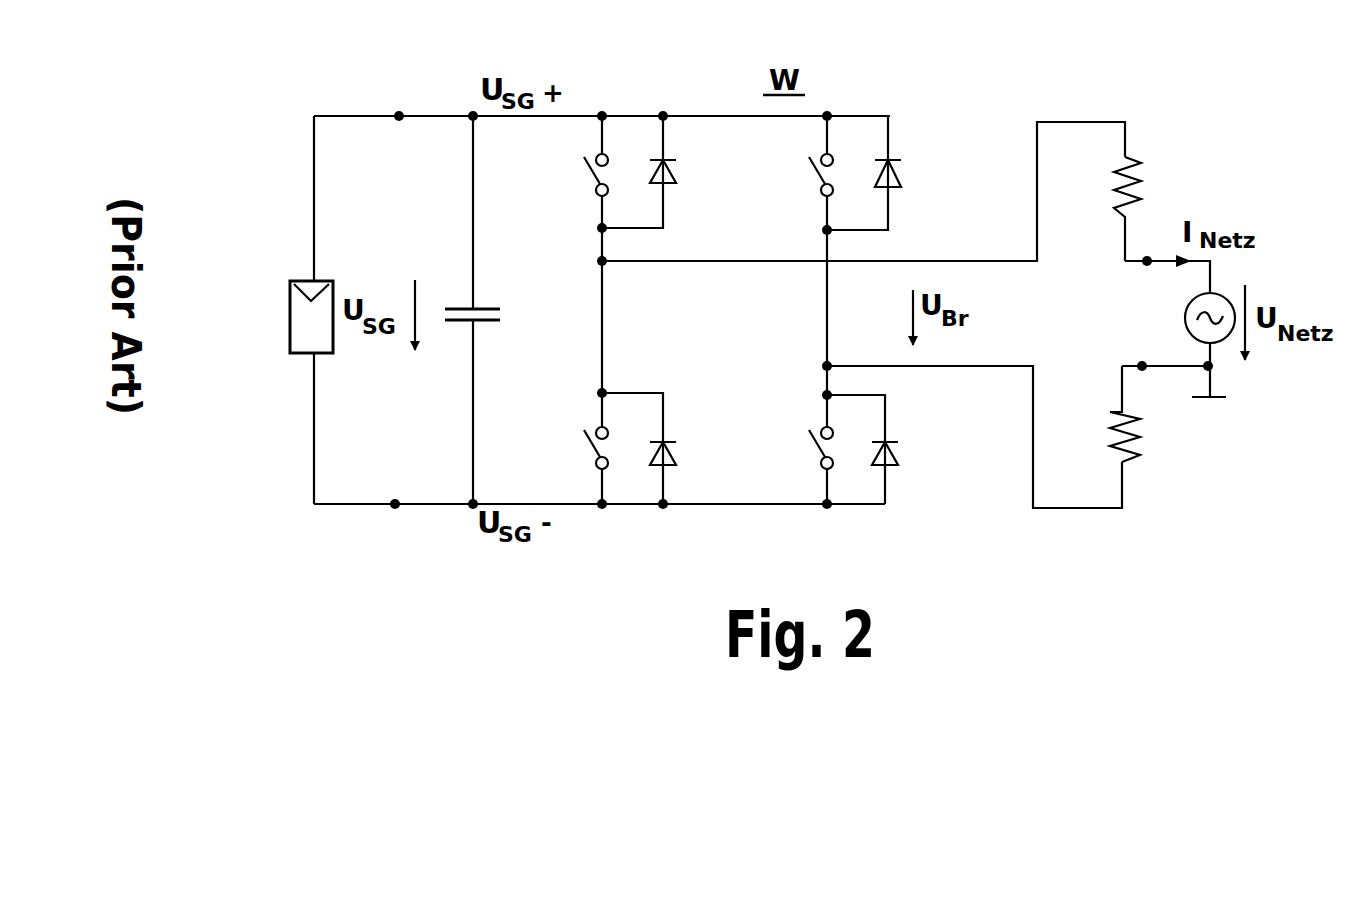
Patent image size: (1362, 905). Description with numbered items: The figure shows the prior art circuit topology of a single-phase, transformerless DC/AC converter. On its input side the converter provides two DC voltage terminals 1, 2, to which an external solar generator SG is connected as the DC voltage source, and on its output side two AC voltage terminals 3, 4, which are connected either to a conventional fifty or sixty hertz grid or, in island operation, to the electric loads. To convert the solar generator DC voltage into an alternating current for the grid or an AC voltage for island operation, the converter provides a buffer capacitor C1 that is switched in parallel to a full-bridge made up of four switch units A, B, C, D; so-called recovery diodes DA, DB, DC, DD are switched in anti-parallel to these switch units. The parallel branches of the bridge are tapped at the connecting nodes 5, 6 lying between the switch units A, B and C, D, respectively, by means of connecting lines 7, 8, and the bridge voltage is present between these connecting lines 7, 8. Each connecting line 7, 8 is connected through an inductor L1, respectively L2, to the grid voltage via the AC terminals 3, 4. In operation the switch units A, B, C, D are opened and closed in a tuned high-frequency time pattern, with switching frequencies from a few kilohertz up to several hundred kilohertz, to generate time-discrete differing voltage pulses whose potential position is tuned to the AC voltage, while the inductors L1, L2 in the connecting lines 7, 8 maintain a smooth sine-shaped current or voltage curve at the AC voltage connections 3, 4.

The DC voltage terminal 1 is at (396, 104).
The DC voltage terminal 2 is at (390, 514).
The AC voltage terminal 3 is at (1154, 256).
The AC voltage terminal 4 is at (1154, 378).
The connecting node 5 is at (620, 272).
The connecting node 6 is at (816, 356).
The connecting line 7 is at (955, 261).
The connecting line 8 is at (950, 367).
The solar generator SG is at (283, 317).
The buffer capacitor C1 is at (480, 310).
The switch unit A is at (585, 172).
The switch unit B is at (586, 448).
The switch unit C is at (810, 173).
The switch unit D is at (809, 449).
The recovery diode DA is at (659, 172).
The recovery diode DB is at (660, 448).
The recovery diode DC is at (883, 173).
The recovery diode DD is at (887, 449).
The inductor L1 is at (1109, 209).
The inductor L2 is at (1106, 414).